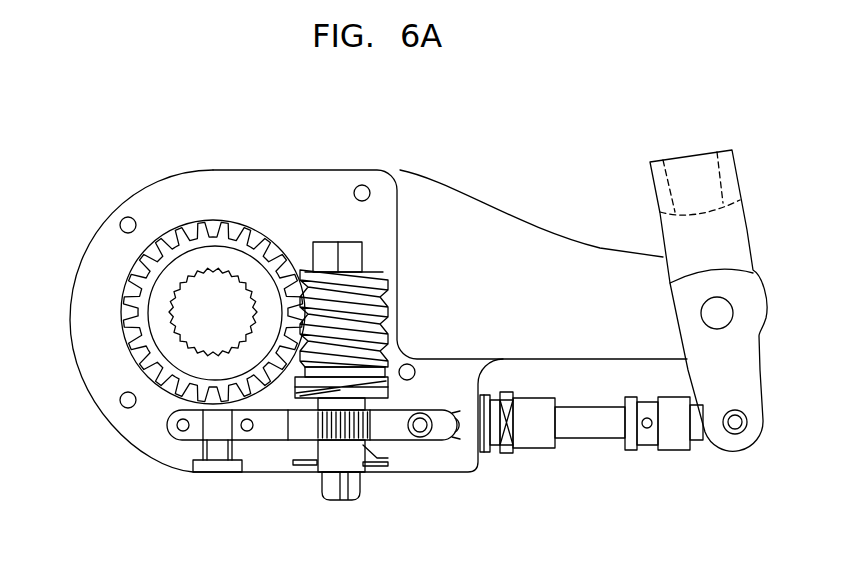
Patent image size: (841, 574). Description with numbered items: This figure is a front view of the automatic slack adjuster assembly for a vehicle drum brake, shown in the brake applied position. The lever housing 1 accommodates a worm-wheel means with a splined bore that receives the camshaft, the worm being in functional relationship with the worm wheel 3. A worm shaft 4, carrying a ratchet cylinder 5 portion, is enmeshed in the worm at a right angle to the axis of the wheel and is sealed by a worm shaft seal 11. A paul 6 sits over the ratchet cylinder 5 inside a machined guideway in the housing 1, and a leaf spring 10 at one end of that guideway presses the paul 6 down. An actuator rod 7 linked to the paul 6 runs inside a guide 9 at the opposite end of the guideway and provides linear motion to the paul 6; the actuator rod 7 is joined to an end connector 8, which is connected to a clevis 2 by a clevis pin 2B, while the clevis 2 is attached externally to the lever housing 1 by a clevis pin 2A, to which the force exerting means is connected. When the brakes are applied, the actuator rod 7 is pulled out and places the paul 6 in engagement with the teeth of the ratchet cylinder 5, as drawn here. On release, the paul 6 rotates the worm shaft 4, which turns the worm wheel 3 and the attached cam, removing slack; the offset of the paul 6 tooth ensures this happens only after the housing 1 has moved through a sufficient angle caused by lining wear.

The lever housing 1 is at (182, 193).
The clevis 2 is at (652, 177).
The clevis pin 2A is at (718, 313).
The clevis pin 2B is at (747, 419).
The worm wheel 3 is at (148, 277).
The worm shaft 4 is at (365, 289).
The ratchet cylinder 5 is at (330, 426).
The paul 6 is at (392, 428).
The actuator rod 7 is at (446, 429).
The end connector 8 is at (672, 437).
The guide 9 is at (533, 432).
The leaf spring 10 is at (200, 427).
The worm shaft seal 11 is at (373, 462).